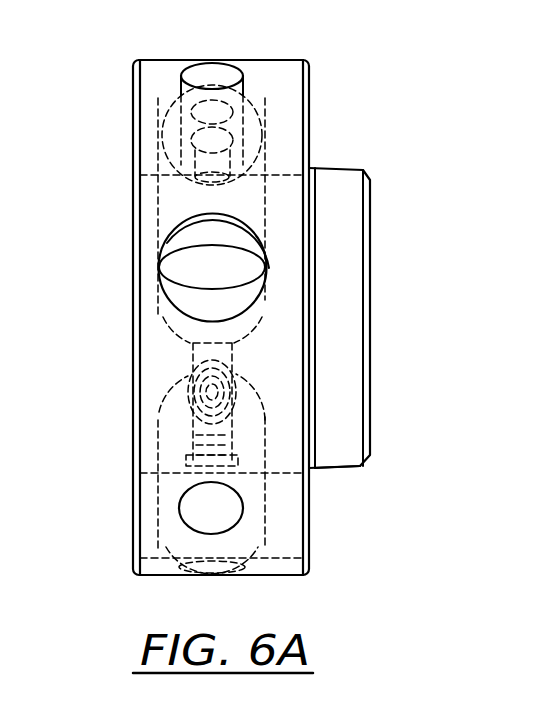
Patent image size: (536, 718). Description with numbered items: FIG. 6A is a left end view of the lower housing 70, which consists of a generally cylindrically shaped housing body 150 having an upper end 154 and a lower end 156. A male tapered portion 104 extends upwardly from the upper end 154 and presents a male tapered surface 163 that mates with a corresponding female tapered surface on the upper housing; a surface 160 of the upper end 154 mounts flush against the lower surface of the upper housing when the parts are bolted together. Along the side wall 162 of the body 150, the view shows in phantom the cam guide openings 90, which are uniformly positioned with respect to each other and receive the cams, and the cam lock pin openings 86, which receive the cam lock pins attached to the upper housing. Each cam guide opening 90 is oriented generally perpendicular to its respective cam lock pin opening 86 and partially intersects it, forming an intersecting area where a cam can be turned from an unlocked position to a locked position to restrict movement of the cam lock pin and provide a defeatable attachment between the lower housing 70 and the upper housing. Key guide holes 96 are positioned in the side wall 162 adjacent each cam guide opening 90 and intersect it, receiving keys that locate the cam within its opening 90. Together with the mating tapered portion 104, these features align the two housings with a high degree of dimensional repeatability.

The lower housing 70 is at (414, 101).
The cam lock pin openings 86 is at (158, 184).
The cam guide openings 90 is at (160, 131).
The key guide holes 96 is at (208, 68).
The male tapered portion 104 is at (345, 468).
The housing body 150 is at (296, 578).
The upper end 154 is at (310, 537).
The lower end 156 is at (133, 531).
The surface 160 is at (310, 152).
The side wall 162 is at (264, 60).
The male tapered surface 163 is at (340, 172).